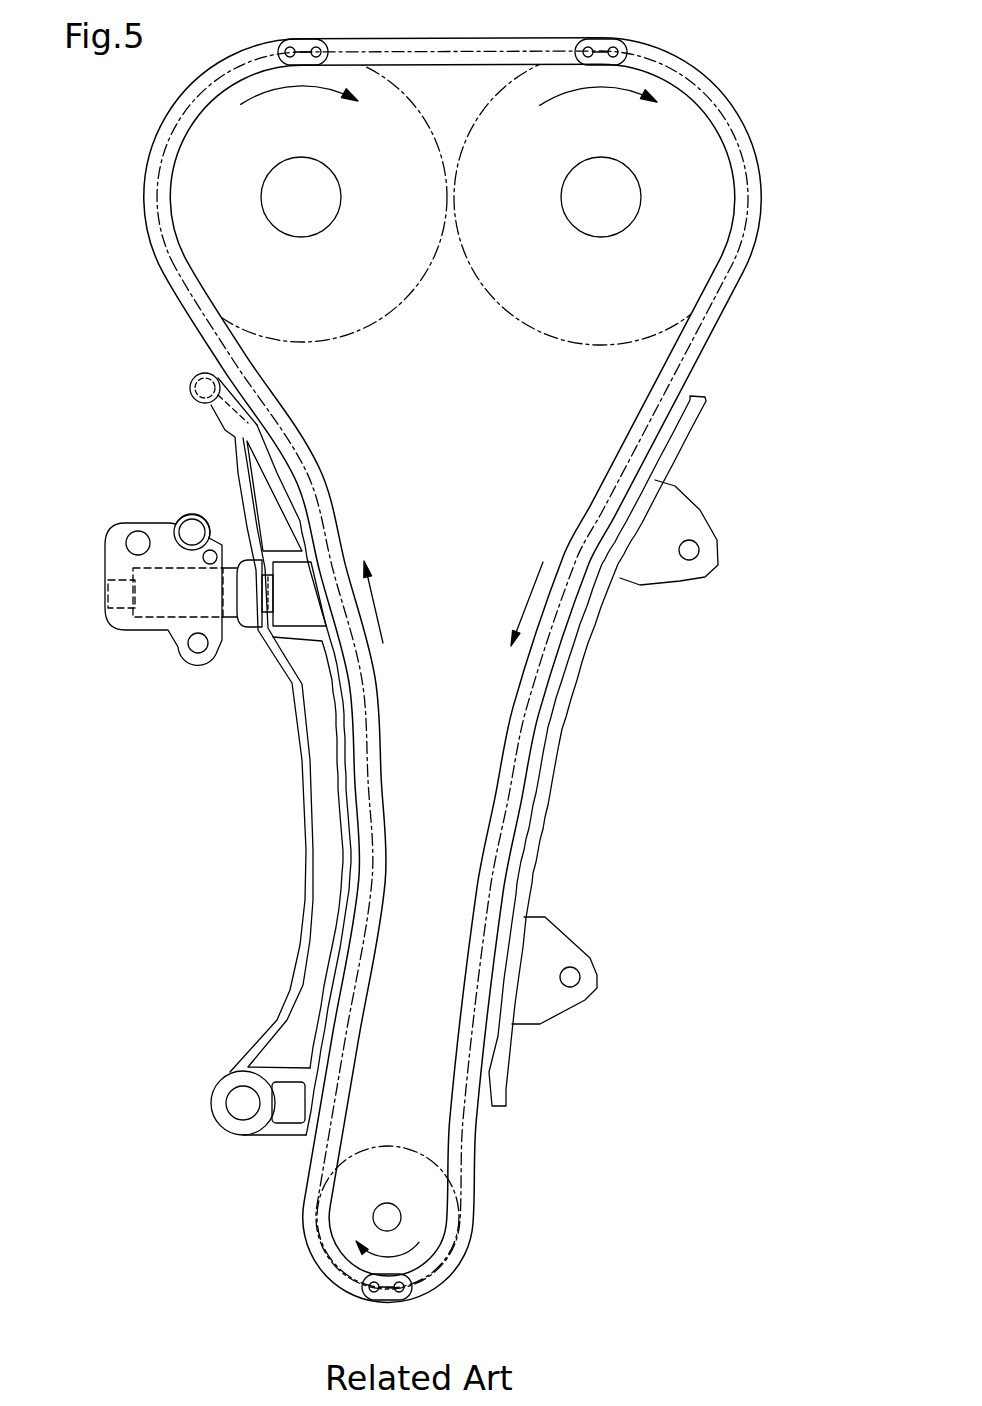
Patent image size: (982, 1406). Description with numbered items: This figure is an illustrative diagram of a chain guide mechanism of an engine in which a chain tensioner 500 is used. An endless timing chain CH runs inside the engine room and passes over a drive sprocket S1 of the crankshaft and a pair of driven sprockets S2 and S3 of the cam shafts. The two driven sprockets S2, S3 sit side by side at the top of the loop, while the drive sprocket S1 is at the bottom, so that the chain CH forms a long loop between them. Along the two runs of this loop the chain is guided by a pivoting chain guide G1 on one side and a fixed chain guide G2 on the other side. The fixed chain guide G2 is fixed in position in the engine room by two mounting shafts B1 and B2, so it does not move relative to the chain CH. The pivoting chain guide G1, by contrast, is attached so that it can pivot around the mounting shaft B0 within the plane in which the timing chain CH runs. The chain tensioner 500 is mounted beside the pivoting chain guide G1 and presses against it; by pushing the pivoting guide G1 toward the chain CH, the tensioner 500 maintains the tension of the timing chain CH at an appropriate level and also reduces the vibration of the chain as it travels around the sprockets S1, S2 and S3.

The drive sprocket S1 is at (425, 1216).
The driven sprocket S2 is at (205, 190).
The driven sprocket S3 is at (677, 182).
The timing chain CH is at (684, 348).
The pivoting chain guide G1 is at (315, 978).
The fixed chain guide G2 is at (537, 810).
The mounting shaft B0 is at (232, 1102).
The mounting shaft B1 is at (700, 549).
The mounting shaft B2 is at (580, 977).
The chain tensioner 500 is at (122, 560).